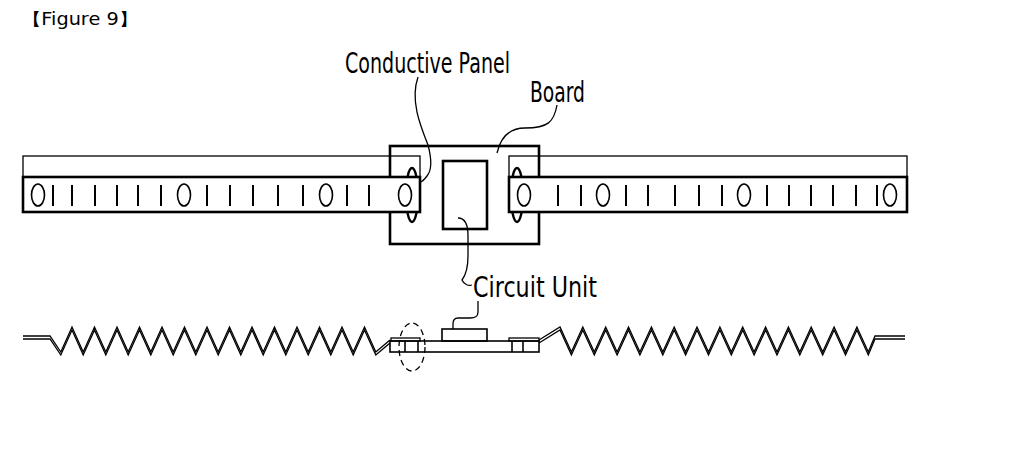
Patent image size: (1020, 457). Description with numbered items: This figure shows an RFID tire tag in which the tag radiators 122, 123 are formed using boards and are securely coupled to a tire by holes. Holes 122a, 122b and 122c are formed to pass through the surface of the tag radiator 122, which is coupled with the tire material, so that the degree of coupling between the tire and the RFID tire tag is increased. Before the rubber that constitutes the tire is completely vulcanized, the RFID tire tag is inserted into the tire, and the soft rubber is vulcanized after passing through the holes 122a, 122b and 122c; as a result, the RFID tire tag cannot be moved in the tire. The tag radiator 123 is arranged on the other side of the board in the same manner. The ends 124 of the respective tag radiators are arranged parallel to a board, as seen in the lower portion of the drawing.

The tag radiator 122 is at (221, 165).
The tag radiator 123 is at (708, 164).
The hole 122a is at (38, 206).
The hole 122b is at (184, 206).
The hole 122c is at (326, 206).
The ends of tag radiators 124 is at (412, 371).